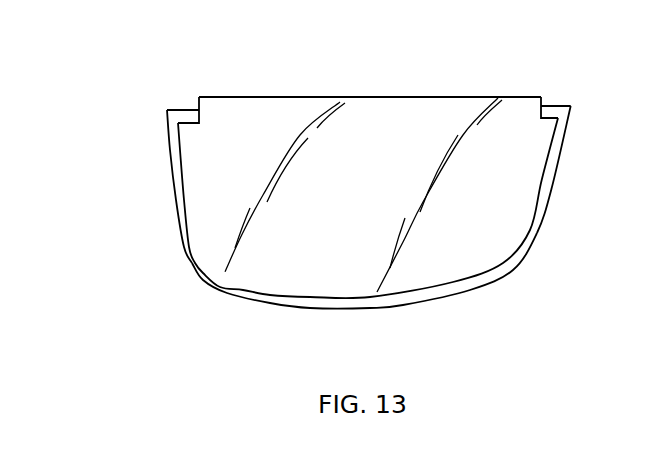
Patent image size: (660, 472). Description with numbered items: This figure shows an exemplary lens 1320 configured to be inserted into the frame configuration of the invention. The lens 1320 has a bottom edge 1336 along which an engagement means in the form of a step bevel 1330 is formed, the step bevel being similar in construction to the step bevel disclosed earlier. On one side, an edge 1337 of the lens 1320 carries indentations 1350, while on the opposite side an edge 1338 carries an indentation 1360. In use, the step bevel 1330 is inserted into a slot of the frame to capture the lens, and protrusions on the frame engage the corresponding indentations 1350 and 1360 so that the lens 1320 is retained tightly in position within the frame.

The lens 1320 is at (198, 228).
The step bevel 1330 is at (237, 296).
The bottom edge 1336 is at (192, 272).
The edge 1337 is at (552, 188).
The edge 1338 is at (170, 180).
The indentations 1350 is at (541, 97).
The indentation 1360 is at (198, 97).